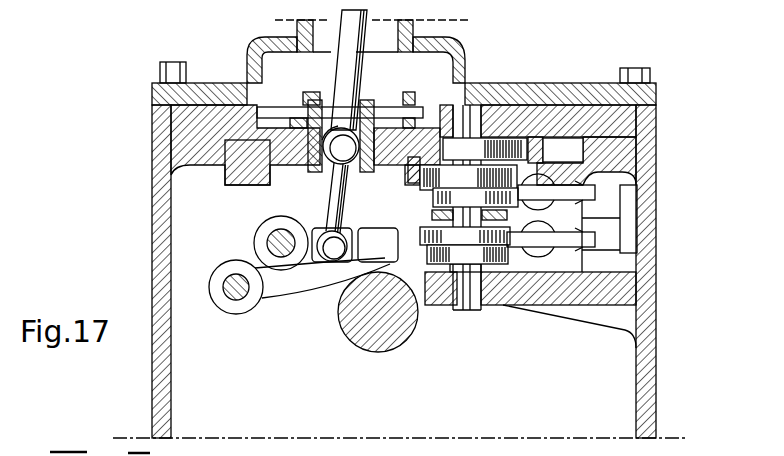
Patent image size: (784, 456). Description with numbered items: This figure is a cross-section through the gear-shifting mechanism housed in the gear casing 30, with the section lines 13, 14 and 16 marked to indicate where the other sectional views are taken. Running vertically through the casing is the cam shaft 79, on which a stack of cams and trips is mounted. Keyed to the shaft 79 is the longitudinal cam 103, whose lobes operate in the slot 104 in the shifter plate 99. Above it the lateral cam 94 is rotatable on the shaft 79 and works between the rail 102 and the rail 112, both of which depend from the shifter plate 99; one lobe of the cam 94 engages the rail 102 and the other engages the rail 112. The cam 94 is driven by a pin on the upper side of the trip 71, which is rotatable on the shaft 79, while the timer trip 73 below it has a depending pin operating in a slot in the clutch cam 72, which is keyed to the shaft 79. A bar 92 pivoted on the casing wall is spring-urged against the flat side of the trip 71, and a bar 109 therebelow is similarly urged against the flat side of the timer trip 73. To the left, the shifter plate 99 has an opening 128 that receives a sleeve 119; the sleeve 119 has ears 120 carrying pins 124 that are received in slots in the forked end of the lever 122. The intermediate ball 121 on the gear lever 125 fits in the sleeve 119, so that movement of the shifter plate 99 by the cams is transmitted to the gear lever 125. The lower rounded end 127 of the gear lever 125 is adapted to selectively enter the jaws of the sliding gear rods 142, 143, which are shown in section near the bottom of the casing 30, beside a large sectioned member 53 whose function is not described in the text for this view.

The gear casing 30 is at (647, 387).
The slot 104 is at (533, 147).
The shifter plate 99 is at (290, 153).
The ears 120 is at (300, 62).
The lever 122 is at (307, 93).
The pins 124 is at (300, 112).
The intermediate ball 121 is at (341, 140).
The sleeve 119 is at (315, 172).
The opening 128 is at (355, 172).
The rail 112 is at (415, 186).
The gear lever 125 is at (345, 208).
The lower rounded end 127 is at (320, 263).
The sliding gear rod 142 is at (268, 243).
The sliding gear rod 143 is at (225, 302).
The shaft 53 is at (393, 333).
The vertical cam shaft 79 is at (476, 302).
The longitudinal cam 103 is at (485, 149).
The rail 102 is at (563, 150).
The lateral cam 94 is at (468, 177).
The trip 71 is at (475, 197).
The timer trip 73 is at (465, 236).
The clutch cam 72 is at (467, 254).
The bar 92 is at (568, 197).
The bar 109 is at (583, 252).
The section line 13 is at (152, 173).
The section line 16 is at (430, 14).
The section line 14 is at (470, 455).